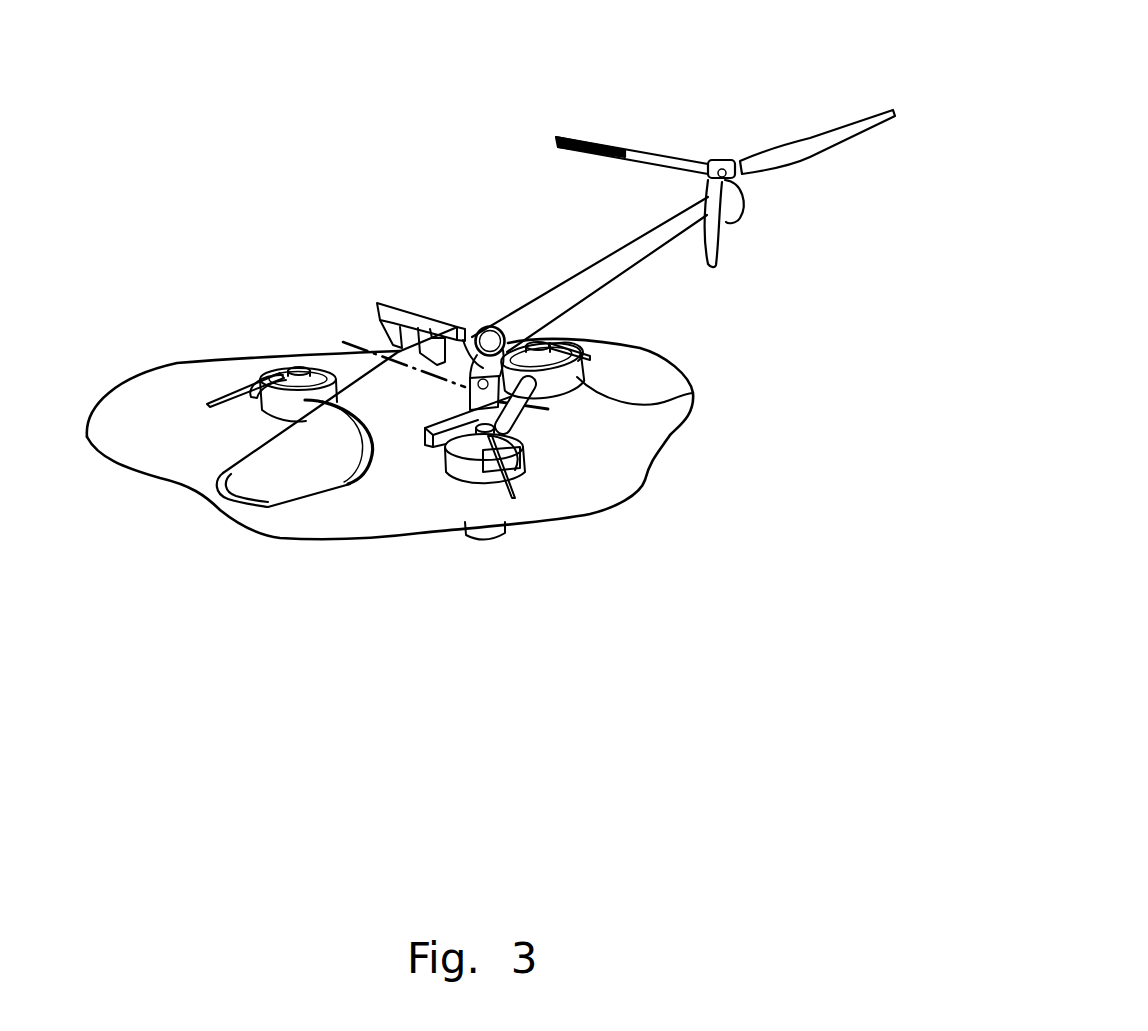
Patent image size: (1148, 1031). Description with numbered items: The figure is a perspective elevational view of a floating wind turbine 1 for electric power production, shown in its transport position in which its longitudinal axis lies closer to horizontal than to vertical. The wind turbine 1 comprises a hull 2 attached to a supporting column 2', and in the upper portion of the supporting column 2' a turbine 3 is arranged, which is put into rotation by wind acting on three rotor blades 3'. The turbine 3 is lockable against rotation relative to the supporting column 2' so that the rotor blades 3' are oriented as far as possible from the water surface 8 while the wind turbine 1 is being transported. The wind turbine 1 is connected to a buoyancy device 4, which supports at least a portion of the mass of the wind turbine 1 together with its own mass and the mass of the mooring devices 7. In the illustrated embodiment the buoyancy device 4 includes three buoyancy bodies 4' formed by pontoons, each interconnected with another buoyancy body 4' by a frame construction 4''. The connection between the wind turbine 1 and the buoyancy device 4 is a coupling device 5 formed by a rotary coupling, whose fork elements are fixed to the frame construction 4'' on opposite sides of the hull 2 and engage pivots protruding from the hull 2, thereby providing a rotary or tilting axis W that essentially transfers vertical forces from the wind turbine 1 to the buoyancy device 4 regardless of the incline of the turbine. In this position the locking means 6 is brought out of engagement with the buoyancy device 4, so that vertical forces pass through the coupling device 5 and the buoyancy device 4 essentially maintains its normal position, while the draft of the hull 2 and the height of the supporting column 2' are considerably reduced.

The wind turbine 1 is at (418, 193).
The hull 2 is at (336, 467).
The supporting column 2' is at (590, 274).
The wind turbine (turbine) 3 is at (650, 177).
The rotor blades 3' is at (817, 87).
The buoyancy device 4 is at (464, 540).
The buoyancy bodies 4' is at (634, 399).
The frame construction 4'' is at (581, 469).
The coupling device 5 is at (486, 328).
The locking means 6 is at (382, 300).
The mooring devices 7 is at (243, 388).
The water surface 8 is at (177, 368).
The rotary or tilting axis W is at (352, 345).